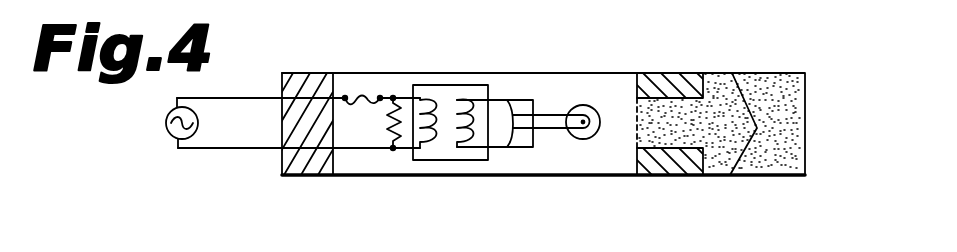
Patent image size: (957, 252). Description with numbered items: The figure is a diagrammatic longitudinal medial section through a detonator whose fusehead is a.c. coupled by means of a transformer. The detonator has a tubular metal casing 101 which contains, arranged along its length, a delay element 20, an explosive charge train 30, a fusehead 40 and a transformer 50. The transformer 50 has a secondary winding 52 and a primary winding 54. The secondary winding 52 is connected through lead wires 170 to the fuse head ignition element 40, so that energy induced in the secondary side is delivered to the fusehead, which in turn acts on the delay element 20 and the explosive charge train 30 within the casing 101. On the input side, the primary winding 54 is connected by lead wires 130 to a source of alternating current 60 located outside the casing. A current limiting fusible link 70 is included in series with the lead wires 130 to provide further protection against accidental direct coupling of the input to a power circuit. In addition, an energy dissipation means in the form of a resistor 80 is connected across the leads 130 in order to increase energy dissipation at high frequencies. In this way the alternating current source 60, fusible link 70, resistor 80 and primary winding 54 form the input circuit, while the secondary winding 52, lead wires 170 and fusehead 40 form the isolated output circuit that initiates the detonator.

The delay element 20 is at (660, 73).
The explosive charge train 30 is at (750, 73).
The fusehead 40 is at (585, 140).
The transformer 50 is at (418, 175).
The transformer secondary winding 52 is at (473, 100).
The primary winding 54 is at (430, 100).
The source of alternating current 60 is at (167, 130).
The current limiting fusible link 70 is at (345, 98).
The resistor 80 is at (390, 130).
The tubular metal casing 101 is at (445, 73).
The lead wires 130 is at (222, 98).
The lead wires 170 is at (517, 147).